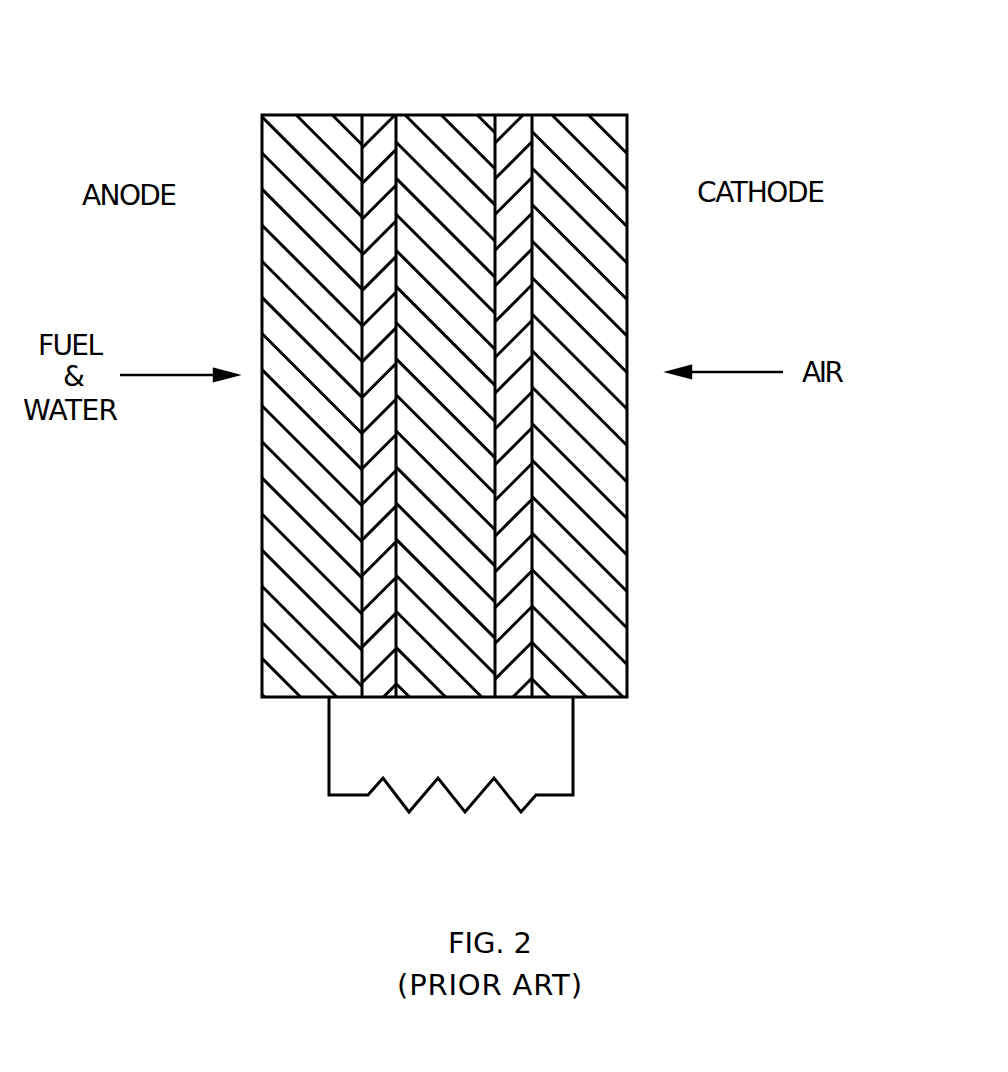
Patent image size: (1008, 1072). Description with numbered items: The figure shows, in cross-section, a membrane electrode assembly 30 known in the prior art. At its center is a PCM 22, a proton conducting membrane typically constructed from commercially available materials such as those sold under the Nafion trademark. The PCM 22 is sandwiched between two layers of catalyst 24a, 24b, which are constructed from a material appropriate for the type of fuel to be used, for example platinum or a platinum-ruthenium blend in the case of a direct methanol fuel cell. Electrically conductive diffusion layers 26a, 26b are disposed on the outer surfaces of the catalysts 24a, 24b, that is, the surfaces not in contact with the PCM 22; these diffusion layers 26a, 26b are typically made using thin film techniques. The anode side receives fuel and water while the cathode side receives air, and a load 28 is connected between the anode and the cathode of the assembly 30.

The membrane electrode assembly 30 is at (534, 351).
The PCM 22 is at (417, 114).
The catalyst layer 24a is at (385, 114).
The catalyst layer 24b is at (523, 114).
The electrically conductive diffusion layer 26a is at (285, 114).
The electrically conductive diffusion layer 26b is at (573, 114).
The load 28 is at (550, 795).